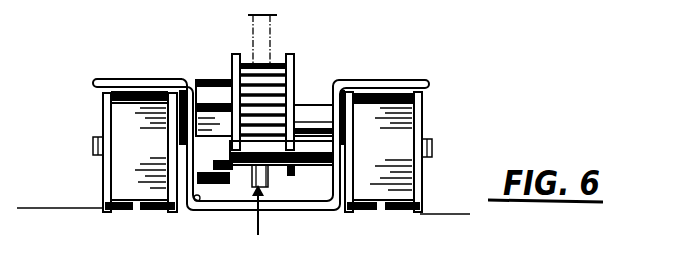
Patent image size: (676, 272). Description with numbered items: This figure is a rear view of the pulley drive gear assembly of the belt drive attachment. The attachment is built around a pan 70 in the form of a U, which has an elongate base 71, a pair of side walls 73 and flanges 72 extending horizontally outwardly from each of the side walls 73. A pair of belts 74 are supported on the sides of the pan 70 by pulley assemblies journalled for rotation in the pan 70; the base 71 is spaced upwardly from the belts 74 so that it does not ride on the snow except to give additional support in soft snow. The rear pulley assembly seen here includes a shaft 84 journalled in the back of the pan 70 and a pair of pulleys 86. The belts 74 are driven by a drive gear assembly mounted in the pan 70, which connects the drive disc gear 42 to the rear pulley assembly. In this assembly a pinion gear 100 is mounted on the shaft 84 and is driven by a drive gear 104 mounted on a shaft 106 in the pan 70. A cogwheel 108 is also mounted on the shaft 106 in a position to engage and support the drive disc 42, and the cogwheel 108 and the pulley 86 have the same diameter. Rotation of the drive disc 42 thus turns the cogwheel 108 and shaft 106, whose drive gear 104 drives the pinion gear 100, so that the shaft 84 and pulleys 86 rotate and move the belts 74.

The drive disc gear 42 is at (248, 15).
The pan 70 is at (336, 216).
The elongate base 71 is at (285, 210).
The flanges 72 is at (106, 78).
The side walls 73 is at (193, 208).
The belts 74 is at (120, 88).
The shaft 84 is at (432, 150).
The pulleys 86 is at (130, 183).
The pinion gear 100 is at (220, 184).
The drive gear 104 is at (205, 78).
The shaft 106 is at (305, 104).
The cogwheel 108 is at (247, 62).